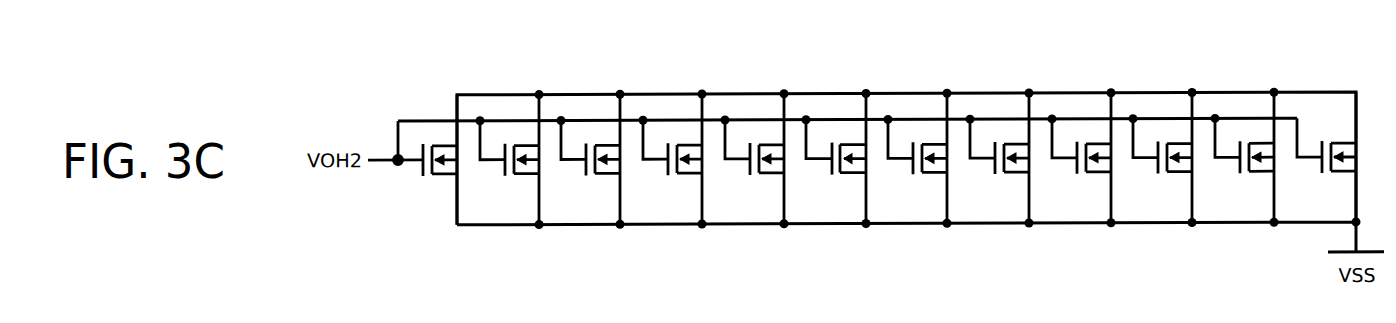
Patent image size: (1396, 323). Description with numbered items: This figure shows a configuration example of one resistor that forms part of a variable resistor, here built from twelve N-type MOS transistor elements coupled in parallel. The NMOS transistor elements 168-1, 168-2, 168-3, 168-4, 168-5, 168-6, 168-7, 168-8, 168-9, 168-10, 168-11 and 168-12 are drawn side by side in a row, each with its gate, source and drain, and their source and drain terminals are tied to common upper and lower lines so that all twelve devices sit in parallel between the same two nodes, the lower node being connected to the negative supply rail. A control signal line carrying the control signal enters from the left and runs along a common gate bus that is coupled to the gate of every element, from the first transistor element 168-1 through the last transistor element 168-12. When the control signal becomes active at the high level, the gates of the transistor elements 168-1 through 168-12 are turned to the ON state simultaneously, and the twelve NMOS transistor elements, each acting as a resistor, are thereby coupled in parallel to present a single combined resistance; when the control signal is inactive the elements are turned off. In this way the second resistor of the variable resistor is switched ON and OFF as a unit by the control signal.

The NMOS transistor element 168-1 is at (412, 180).
The NMOS transistor element 168-2 is at (494, 180).
The NMOS transistor element 168-3 is at (575, 180).
The NMOS transistor element 168-4 is at (657, 180).
The NMOS transistor element 168-5 is at (739, 180).
The NMOS transistor element 168-6 is at (820, 180).
The NMOS transistor element 168-7 is at (902, 180).
The NMOS transistor element 168-8 is at (984, 180).
The NMOS transistor element 168-9 is at (1066, 180).
The NMOS transistor element 168-10 is at (1147, 180).
The NMOS transistor element 168-11 is at (1229, 180).
The NMOS transistor element 168-12 is at (1315, 138).